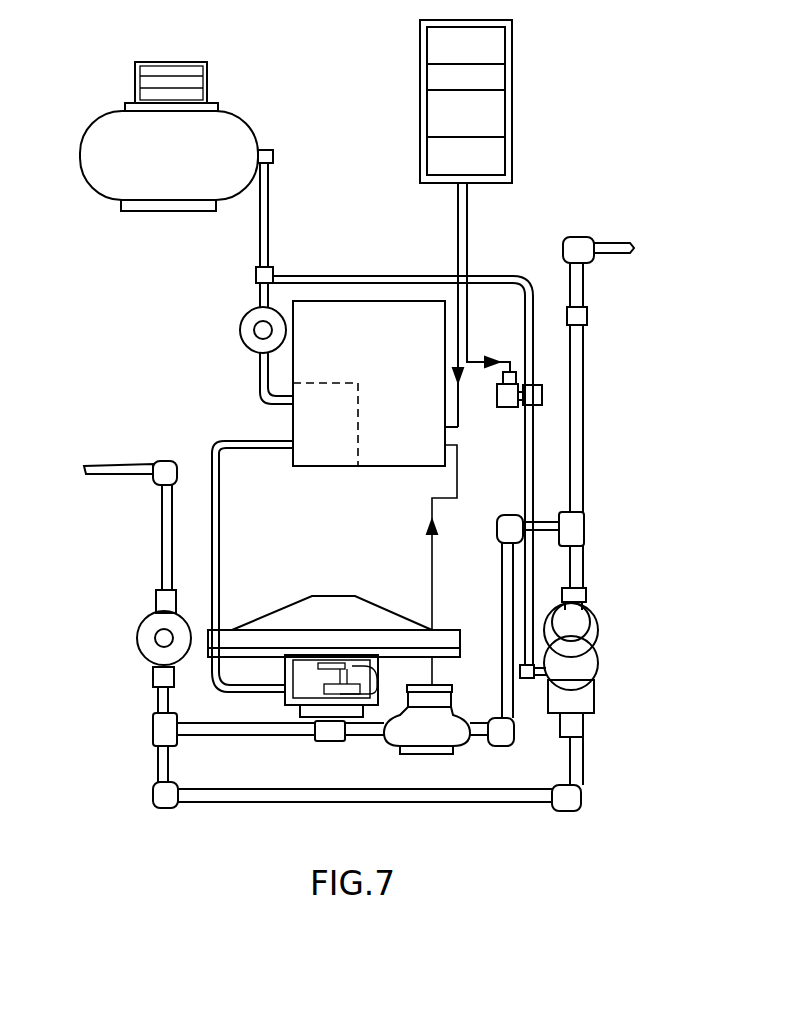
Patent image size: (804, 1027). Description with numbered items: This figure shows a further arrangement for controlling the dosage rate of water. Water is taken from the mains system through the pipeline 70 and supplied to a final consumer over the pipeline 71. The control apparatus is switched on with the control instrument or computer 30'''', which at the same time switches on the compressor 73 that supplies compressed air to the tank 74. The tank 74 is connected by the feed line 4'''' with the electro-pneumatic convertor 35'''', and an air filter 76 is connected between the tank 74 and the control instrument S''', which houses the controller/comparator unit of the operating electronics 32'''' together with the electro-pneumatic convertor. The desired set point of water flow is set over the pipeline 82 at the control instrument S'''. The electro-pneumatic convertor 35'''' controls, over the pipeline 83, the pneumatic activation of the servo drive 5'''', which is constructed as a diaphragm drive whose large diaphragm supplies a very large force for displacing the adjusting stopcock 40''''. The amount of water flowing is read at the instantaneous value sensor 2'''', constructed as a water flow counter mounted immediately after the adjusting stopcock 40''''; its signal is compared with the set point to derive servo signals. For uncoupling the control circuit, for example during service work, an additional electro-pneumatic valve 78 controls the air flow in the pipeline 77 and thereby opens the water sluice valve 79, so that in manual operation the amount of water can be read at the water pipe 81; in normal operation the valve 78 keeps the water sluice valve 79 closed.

The compressor 73 is at (160, 60).
The tank 74 is at (160, 212).
The feed line 4'''' is at (289, 283).
The air filter 76 is at (240, 330).
The control instrument or computer 30'''' is at (506, 101).
The pipeline 82 is at (458, 222).
The pipeline 71 is at (634, 248).
The water pipe 81 is at (584, 378).
The pipeline 77 is at (324, 273).
The operating electronics 32'''' is at (379, 493).
The electro-pneumatic convertor 35'''' is at (325, 440).
The control instrument S''' is at (401, 485).
The electro-pneumatic valve 78 is at (500, 408).
The pipeline 70 is at (93, 464).
The pipeline 83 is at (219, 538).
The servo drive 5'''' is at (334, 642).
The adjusting stopcock 40'''' is at (341, 752).
The instantaneous value sensor 2'''' is at (440, 735).
The water sluice valve 79 is at (596, 644).